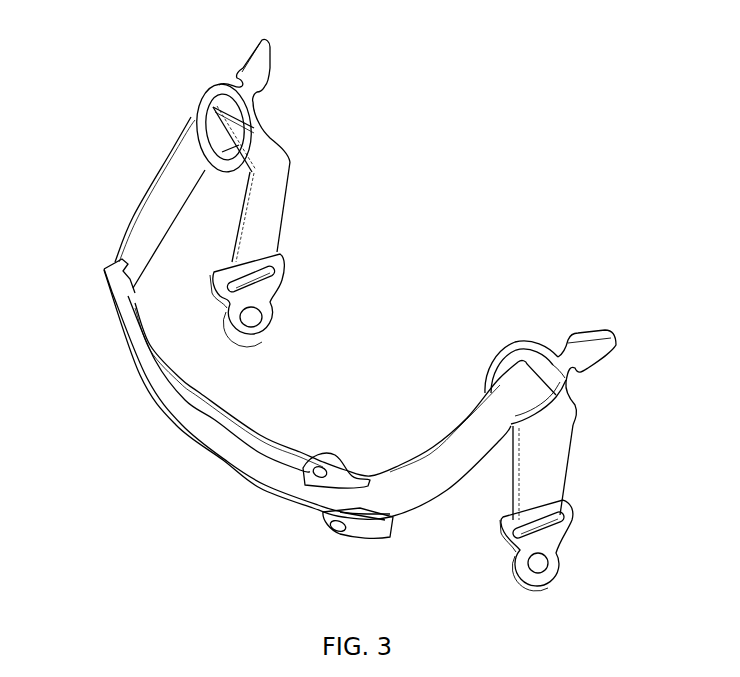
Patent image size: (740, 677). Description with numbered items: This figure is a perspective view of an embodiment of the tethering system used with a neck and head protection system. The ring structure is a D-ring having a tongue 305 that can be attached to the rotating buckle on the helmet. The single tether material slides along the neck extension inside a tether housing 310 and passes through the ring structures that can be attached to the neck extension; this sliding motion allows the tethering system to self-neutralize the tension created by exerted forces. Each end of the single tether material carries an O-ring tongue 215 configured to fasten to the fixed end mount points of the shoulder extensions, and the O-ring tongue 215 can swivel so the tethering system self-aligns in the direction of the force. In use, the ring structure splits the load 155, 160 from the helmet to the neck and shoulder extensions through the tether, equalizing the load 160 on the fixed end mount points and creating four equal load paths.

The load 155 is at (146, 183).
The load 160 is at (290, 163).
The O-ring tongue 215 is at (287, 262).
The tongue 305 is at (212, 95).
The tether housing 310 is at (215, 405).